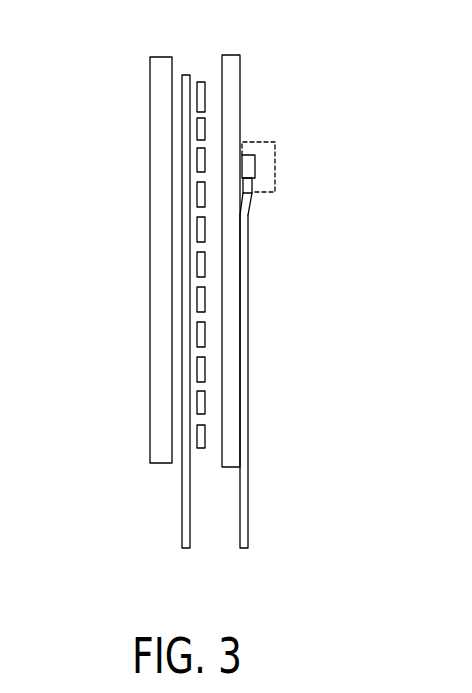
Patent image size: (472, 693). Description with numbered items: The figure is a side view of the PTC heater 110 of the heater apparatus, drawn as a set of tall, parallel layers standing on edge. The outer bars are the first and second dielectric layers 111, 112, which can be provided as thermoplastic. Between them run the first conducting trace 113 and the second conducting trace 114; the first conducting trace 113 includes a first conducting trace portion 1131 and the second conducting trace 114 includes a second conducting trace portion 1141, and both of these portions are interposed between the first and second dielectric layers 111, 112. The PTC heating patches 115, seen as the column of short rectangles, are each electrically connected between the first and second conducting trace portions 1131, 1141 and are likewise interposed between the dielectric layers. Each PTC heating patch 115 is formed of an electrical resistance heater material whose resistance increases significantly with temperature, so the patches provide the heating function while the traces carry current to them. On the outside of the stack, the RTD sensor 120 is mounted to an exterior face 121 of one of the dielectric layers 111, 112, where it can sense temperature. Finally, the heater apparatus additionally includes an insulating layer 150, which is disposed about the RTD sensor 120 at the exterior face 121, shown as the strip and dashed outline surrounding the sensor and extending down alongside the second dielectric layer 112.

The PTC heater 110 is at (130, 101).
The first dielectric layer 111 is at (150, 70).
The second dielectric layer 112 is at (240, 62).
The first conducting trace 113 is at (117, 311).
The second conducting trace 114 is at (162, 511).
The first conducting trace portion 1131 is at (275, 259).
The second conducting trace portion 1141 is at (193, 116).
The PTC heating patches 115 is at (203, 150).
The RTD sensor 120 is at (255, 168).
The insulating layer 150 is at (272, 188).
The exterior face 121 is at (240, 413).